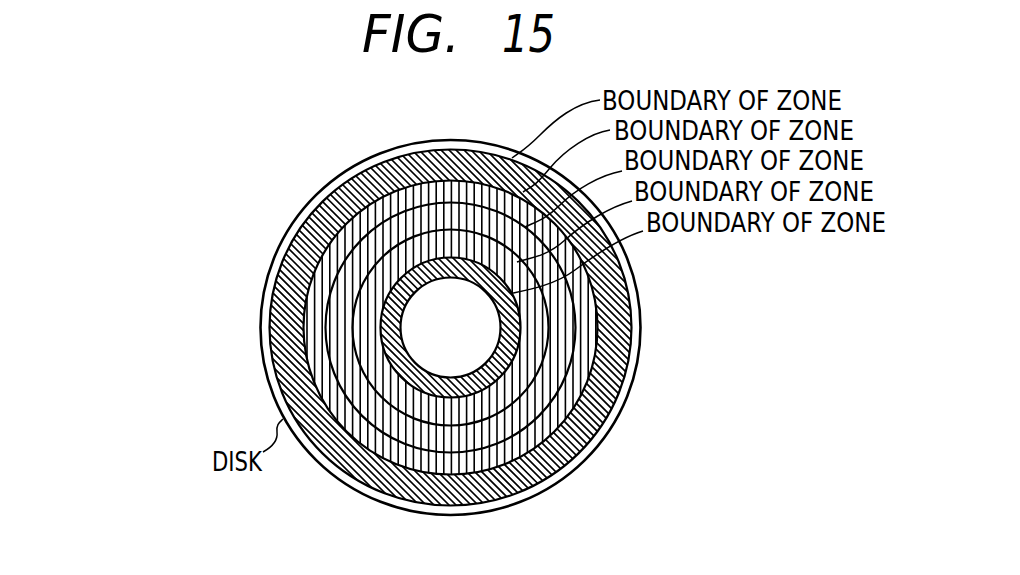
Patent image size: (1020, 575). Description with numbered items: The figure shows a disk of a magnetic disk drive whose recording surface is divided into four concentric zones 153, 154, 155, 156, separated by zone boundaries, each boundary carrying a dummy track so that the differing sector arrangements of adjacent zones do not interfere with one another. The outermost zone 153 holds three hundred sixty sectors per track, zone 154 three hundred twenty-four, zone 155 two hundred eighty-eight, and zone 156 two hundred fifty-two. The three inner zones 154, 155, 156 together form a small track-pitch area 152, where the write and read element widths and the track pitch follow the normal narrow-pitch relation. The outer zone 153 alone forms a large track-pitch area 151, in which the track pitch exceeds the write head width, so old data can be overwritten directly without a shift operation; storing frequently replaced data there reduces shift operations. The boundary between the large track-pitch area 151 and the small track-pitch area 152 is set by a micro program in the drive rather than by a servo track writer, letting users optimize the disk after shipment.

The large track-pitch area 151 is at (318, 221).
The small track-pitch area 152 is at (317, 307).
The zone 153 is at (570, 463).
The zone 154 is at (560, 417).
The zone 155 is at (550, 380).
The zone 156 is at (537, 343).